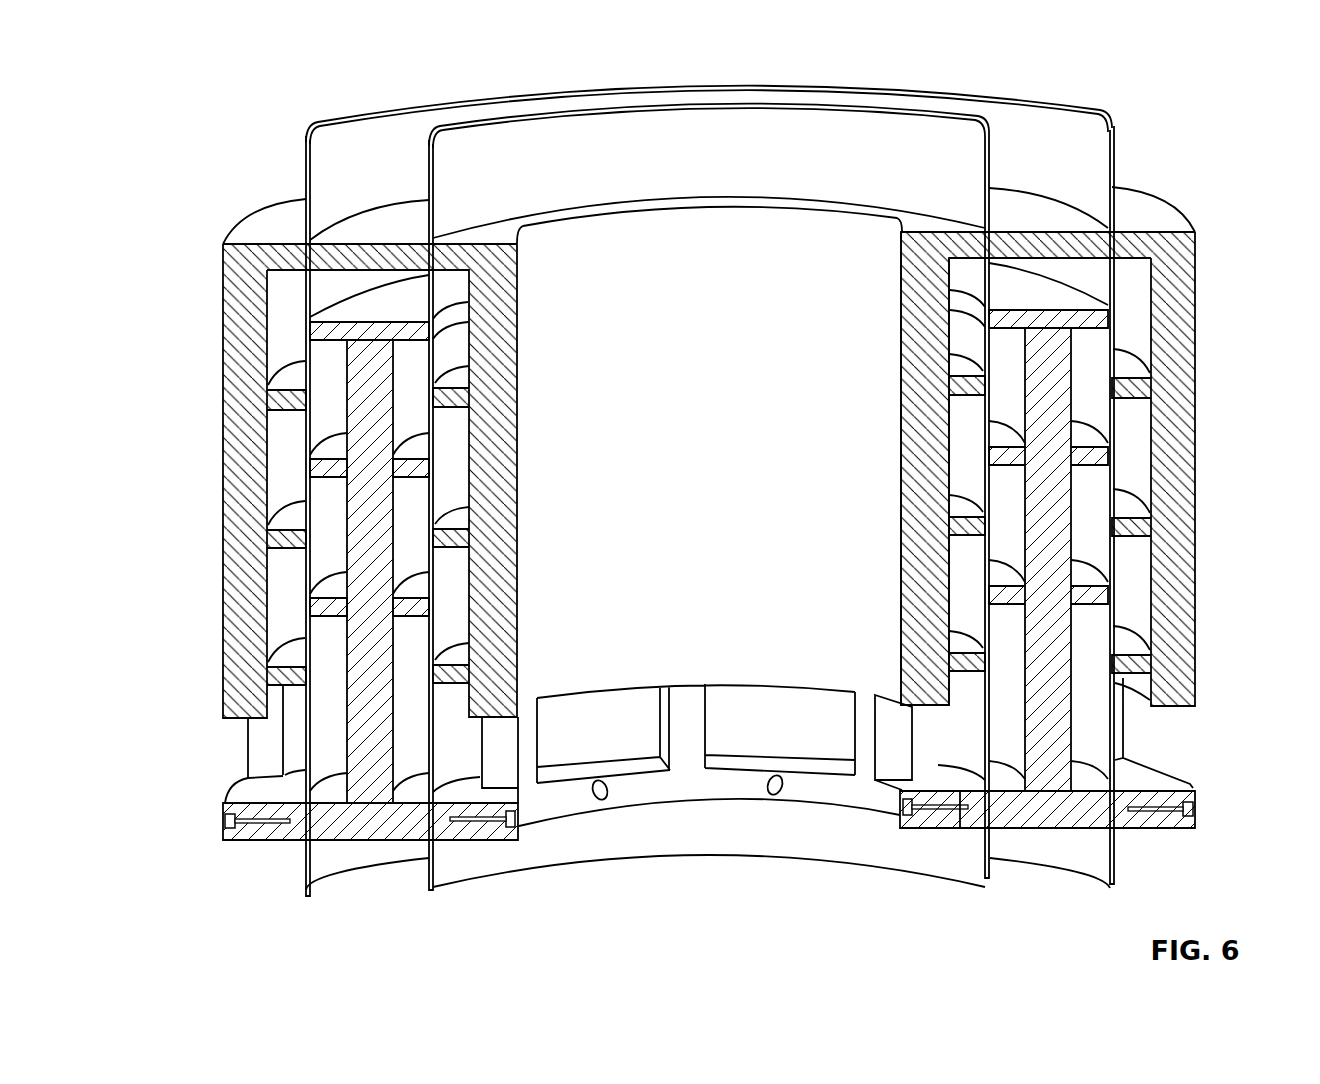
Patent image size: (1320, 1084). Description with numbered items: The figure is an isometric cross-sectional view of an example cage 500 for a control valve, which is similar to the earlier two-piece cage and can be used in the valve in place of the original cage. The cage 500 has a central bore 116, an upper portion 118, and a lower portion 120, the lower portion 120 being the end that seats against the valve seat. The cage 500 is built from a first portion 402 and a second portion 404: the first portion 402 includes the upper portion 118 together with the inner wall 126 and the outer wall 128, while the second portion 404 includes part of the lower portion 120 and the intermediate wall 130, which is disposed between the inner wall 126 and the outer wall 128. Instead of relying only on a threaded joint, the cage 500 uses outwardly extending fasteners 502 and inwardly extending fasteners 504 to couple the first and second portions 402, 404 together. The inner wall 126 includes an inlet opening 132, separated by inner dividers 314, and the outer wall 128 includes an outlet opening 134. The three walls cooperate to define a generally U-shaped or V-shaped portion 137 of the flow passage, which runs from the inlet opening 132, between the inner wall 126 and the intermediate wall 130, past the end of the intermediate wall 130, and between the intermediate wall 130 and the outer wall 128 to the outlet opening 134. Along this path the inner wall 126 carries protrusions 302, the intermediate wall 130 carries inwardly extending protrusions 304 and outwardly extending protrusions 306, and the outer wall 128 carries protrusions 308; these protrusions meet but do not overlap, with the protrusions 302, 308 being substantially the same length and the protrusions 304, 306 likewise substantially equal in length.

The cage 500 is at (213, 76).
The central bore 116 is at (771, 272).
The upper portion 118 is at (257, 257).
The first portion 402 is at (278, 324).
The outer wall 128 is at (242, 463).
The portion of the flow passage 137 is at (290, 487).
The protrusions 302 is at (460, 535).
The inwardly extending protrusions 304 is at (460, 593).
The outwardly extending protrusions 306 is at (320, 605).
The protrusions 308 is at (290, 673).
The outlet opening 134 is at (260, 745).
The inwardly extending fasteners 504 is at (227, 822).
The lower portion 120 is at (343, 838).
The second portion 404 is at (367, 817).
The outwardly extending fasteners 502 is at (525, 820).
The inlet opening 132 is at (780, 762).
The inner dividers 314 is at (873, 738).
The inner wall 126 is at (945, 505).
The intermediate wall 130 is at (1055, 708).